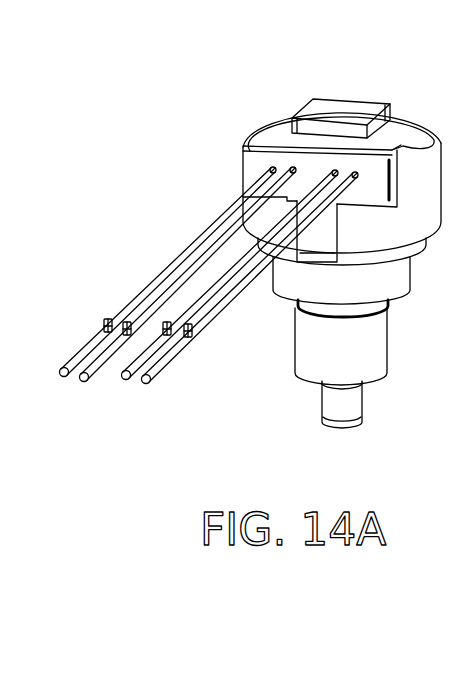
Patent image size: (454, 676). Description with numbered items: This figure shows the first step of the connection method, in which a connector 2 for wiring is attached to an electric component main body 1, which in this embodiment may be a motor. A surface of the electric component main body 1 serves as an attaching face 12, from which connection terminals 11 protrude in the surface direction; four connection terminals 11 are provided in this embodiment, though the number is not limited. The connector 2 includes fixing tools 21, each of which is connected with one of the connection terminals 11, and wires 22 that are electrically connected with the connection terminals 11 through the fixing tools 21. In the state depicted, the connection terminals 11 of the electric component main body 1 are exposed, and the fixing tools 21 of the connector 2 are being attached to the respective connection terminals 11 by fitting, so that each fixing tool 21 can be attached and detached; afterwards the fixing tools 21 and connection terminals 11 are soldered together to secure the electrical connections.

The electric component main body 1 is at (397, 353).
The connector 2 is at (257, 246).
The connection terminal 11 is at (292, 166).
The attaching face 12 is at (257, 168).
The fixing tool 21 is at (193, 337).
The wire 22 is at (165, 365).